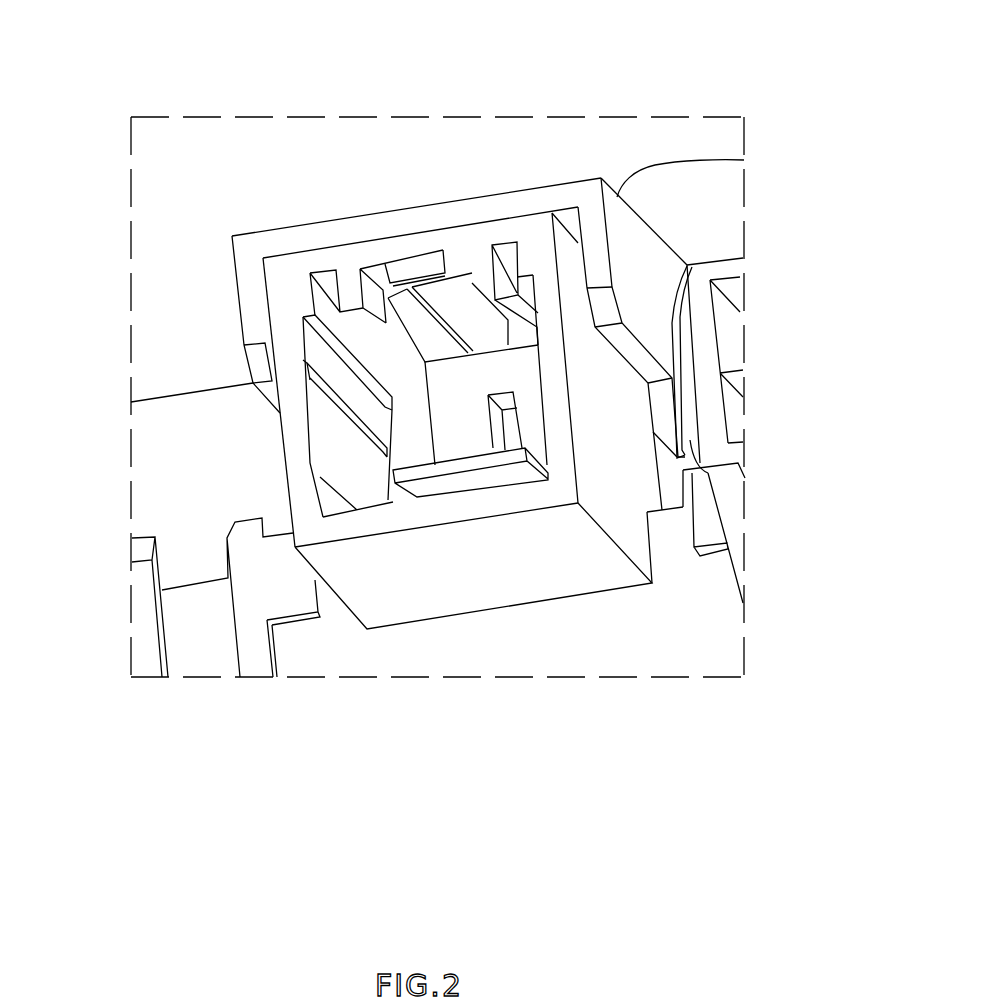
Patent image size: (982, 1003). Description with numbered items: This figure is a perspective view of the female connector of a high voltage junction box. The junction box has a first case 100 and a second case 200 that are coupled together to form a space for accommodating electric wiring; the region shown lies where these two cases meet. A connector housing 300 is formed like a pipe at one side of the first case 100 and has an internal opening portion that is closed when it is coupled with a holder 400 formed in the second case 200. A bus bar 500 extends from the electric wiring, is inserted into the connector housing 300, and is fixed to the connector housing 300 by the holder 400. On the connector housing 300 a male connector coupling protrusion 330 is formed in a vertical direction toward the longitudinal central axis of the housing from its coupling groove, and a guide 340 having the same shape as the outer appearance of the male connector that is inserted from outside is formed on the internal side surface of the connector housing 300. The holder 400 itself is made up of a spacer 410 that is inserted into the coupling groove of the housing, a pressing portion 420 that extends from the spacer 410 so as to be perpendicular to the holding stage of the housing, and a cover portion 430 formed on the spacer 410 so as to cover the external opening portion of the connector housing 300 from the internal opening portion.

The first case 100 is at (748, 643).
The second case 200 is at (178, 378).
The connector housing 300 is at (515, 615).
The male connector coupling protrusion 330 is at (348, 285).
The guide 340 is at (322, 368).
The holder 400 is at (527, 42).
The spacer 410 is at (495, 490).
The pressing portion 420 is at (458, 297).
The cover portion 430 is at (533, 203).
The bus bar 500 is at (423, 483).